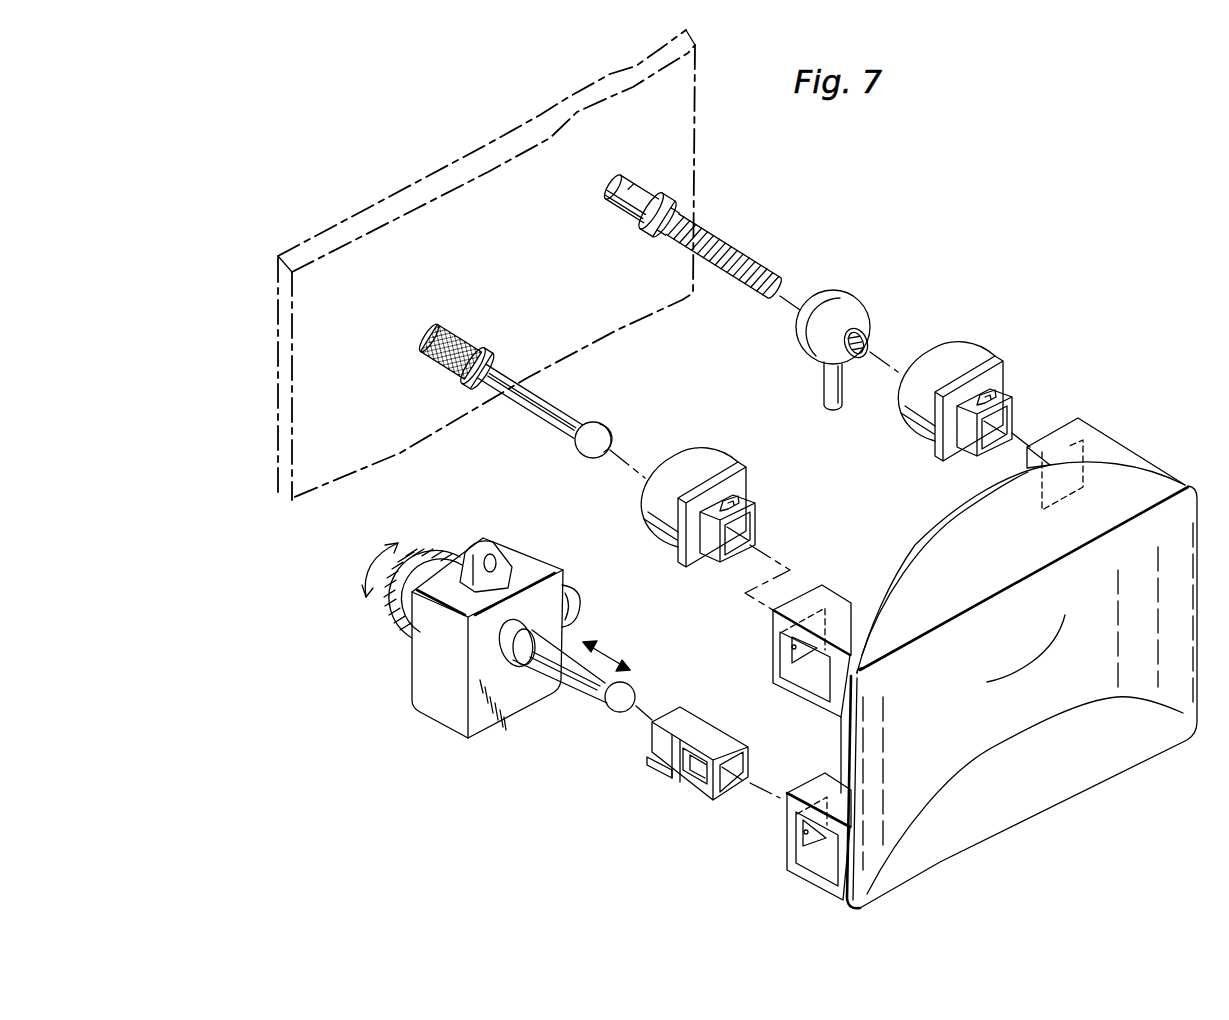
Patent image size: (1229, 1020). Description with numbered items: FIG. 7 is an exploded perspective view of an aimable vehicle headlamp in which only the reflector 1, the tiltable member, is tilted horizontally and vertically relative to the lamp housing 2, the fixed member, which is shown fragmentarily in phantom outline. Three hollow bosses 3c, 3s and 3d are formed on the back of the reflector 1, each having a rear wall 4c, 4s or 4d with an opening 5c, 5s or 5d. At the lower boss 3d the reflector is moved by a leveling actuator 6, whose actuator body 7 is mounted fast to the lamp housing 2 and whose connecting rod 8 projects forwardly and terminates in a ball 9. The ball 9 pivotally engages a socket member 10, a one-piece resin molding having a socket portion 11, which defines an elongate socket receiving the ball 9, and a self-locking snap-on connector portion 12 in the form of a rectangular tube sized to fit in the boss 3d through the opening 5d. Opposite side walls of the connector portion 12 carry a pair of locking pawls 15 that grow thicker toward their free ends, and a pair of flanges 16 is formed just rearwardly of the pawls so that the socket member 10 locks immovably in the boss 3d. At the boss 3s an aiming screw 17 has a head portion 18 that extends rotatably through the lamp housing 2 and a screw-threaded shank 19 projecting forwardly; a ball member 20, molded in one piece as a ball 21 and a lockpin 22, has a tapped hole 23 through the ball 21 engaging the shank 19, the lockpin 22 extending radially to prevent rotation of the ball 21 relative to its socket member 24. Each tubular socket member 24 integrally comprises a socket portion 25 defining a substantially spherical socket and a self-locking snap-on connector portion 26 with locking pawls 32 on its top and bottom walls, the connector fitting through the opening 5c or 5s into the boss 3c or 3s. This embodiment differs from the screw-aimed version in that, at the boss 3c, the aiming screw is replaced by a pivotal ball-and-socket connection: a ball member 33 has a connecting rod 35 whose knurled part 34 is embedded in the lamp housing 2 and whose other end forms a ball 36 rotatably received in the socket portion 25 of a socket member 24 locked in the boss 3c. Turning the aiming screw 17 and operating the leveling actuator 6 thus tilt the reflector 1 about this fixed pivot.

The reflector 1 is at (949, 871).
The lamp housing 2 is at (290, 497).
The hollow boss 3c is at (840, 593).
The hollow boss 3d is at (817, 870).
The hollow boss 3s is at (1123, 453).
The rear wall 4c is at (790, 670).
The rear wall 4d is at (800, 848).
The rear wall 4s is at (1028, 455).
The opening 5c is at (790, 643).
The opening 5d is at (810, 825).
The opening 5s is at (1083, 442).
The leveling actuator 6 is at (433, 713).
The actuator body 7 is at (520, 540).
The connecting rod 8 is at (582, 680).
The ball 9 is at (607, 705).
The socket member 10 is at (660, 760).
The socket portion 11 is at (688, 712).
The self-locking snap-on connector portion 12 is at (710, 800).
The locking pawls 15 is at (695, 787).
The flanges 16 is at (717, 722).
The aiming screw 17 is at (707, 228).
The screw head 18 is at (608, 197).
The screw-threaded shank 19 is at (742, 255).
The ball member 20 is at (848, 292).
The ball 21 is at (800, 345).
The lockpin 22 is at (823, 390).
The tapped hole 23 is at (866, 342).
The socket member 24 is at (690, 452).
The socket portion 25 is at (650, 518).
The self-locking snap-on connector portion 26 is at (755, 503).
The locking pawls 32 is at (735, 497).
The ball member 33 is at (550, 397).
The knurled part 34 is at (428, 350).
The connecting rod 35 is at (520, 410).
The ball 36 is at (592, 452).